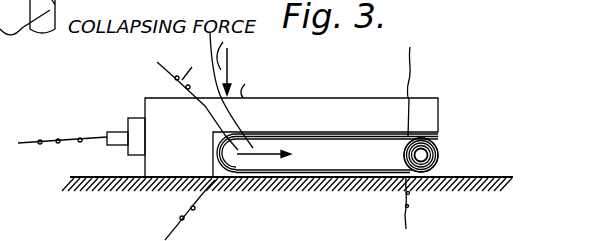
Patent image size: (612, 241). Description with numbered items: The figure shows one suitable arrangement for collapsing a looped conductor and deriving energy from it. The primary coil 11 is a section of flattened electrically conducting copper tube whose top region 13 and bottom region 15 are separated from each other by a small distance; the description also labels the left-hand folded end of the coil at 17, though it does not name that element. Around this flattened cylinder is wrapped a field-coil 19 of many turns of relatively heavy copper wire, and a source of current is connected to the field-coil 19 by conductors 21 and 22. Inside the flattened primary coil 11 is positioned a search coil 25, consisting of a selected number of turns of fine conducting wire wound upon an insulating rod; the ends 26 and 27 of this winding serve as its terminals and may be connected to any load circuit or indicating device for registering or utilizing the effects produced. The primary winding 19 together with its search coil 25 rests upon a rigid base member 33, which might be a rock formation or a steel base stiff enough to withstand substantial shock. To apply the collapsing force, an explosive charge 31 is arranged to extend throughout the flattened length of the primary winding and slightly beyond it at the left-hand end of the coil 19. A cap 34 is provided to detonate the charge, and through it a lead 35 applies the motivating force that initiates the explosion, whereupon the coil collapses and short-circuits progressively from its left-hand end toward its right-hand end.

The primary coil 11 is at (272, 163).
The top region 13 is at (325, 138).
The bottom region 15 is at (320, 165).
The fold of belt 17 is at (242, 160).
The field-coil 19 is at (421, 155).
The conductor 21 is at (197, 97).
The conductor 22 is at (180, 212).
The search coil 25 is at (438, 146).
The end of winding 26 is at (412, 46).
The end of winding 27 is at (405, 204).
The explosive charge 31 is at (234, 90).
The rigid base member 33 is at (100, 187).
The cap 34 is at (135, 115).
The lead 35 is at (48, 133).